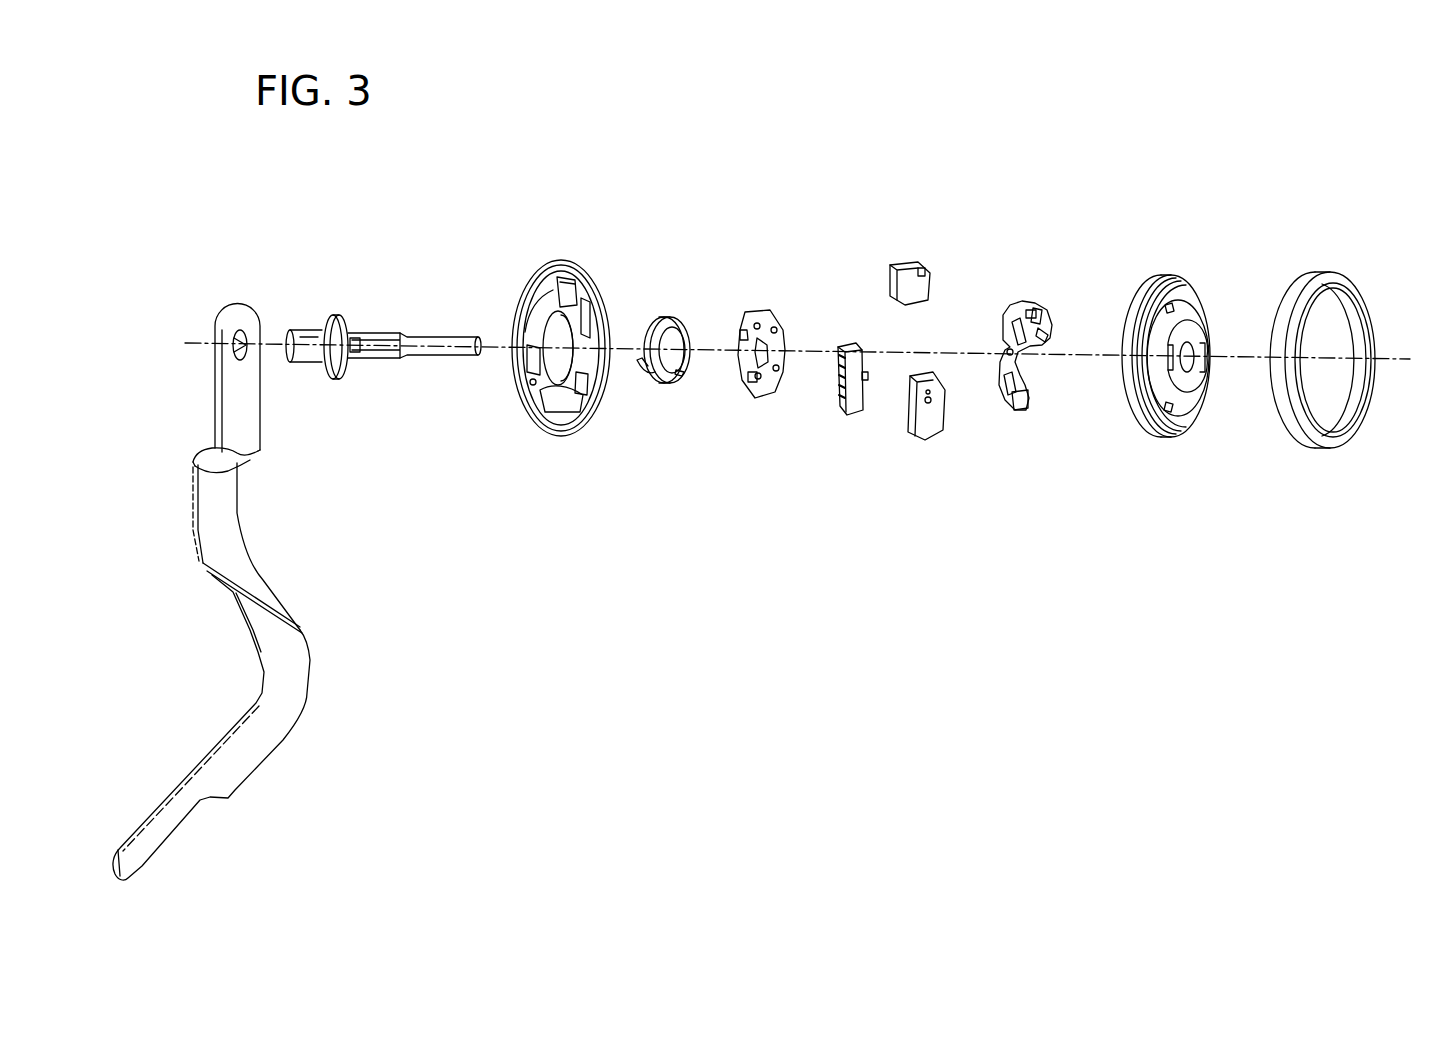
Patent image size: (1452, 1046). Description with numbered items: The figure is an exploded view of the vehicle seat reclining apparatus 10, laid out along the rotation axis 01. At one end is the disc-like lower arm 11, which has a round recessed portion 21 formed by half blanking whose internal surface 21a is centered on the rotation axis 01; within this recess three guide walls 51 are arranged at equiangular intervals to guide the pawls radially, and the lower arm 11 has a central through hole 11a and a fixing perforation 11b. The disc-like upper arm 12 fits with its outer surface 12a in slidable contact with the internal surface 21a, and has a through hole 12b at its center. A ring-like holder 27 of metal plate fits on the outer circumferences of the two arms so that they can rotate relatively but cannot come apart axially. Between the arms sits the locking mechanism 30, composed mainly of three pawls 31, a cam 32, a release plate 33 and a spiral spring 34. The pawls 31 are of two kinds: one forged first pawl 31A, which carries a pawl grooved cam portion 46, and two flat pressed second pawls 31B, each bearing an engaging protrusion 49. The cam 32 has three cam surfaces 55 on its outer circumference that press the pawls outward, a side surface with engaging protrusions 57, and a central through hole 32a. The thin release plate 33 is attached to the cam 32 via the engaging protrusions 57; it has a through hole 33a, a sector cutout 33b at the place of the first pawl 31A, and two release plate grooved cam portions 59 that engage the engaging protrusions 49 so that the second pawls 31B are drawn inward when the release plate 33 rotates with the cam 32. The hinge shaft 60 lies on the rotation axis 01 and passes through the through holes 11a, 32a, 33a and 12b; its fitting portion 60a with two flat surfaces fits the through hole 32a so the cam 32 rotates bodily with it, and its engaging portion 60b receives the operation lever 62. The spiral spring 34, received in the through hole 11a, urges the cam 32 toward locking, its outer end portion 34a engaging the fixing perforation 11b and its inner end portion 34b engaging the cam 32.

The rotation axis 01 is at (815, 361).
The vehicle seat reclining apparatus 10 is at (815, 242).
The lower arm 11 is at (538, 342).
The through hole 11a is at (555, 330).
The fixing perforation 11b is at (535, 375).
The upper arm 12 is at (1176, 350).
The outer surface 12a is at (1140, 421).
The through hole 12b is at (1189, 359).
The round recessed portion 21 is at (570, 280).
The internal surface 21a is at (590, 410).
The ring-like holder 27 is at (1292, 277).
The locking mechanism 30 is at (900, 337).
The pawls 31 is at (892, 356).
The first pawl 31A is at (953, 430).
The second pawl 31B is at (848, 383).
The cam 32 is at (777, 345).
The through hole 32a is at (775, 350).
The release plate 33 is at (1007, 334).
The through hole 33a is at (1005, 351).
The sector cutout 33b is at (1030, 392).
The spiral spring 34 is at (669, 341).
The outer end portion 34a is at (655, 372).
The inner end portion 34b is at (680, 374).
The pawl grooved cam portion 46 is at (931, 401).
The engaging protrusion 49 is at (868, 376).
The guide walls 51 is at (558, 408).
The cam surfaces 55 is at (745, 330).
The engaging protrusions 57 is at (752, 385).
The release plate grooved cam portions 59 is at (1036, 306).
The hinge shaft 60 is at (383, 339).
The fitting portion 60a is at (350, 355).
The engaging portion 60b is at (300, 333).
The operation lever 62 is at (262, 560).